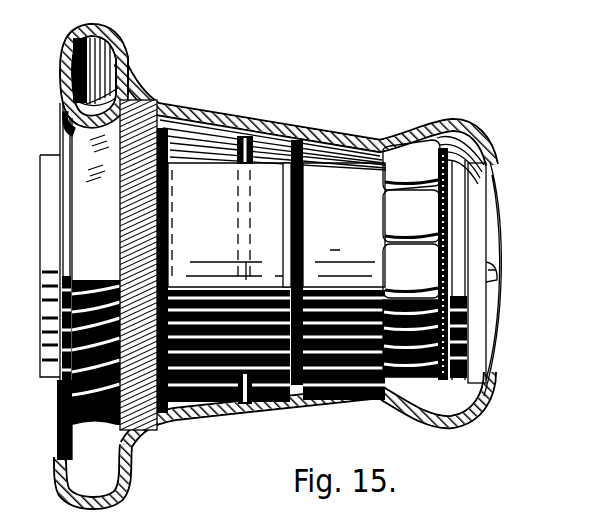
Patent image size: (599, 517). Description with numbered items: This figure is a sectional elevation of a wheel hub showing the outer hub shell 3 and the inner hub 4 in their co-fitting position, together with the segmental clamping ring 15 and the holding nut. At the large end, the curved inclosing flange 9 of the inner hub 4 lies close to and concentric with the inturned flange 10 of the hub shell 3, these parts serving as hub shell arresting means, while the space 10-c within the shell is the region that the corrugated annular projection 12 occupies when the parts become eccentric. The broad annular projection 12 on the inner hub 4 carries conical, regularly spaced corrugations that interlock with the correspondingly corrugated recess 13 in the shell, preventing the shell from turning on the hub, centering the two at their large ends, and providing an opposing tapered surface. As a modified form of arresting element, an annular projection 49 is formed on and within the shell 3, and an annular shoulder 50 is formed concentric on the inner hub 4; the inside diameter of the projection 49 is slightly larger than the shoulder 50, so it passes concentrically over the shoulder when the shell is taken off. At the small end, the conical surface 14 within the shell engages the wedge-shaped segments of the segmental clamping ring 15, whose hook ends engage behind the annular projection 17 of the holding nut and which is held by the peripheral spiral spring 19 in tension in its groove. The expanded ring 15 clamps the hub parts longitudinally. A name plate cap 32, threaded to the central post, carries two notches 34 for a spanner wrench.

The inturned flange 10 is at (66, 60).
The curved inclosing flange 9 is at (66, 76).
The annular projection 12 is at (138, 122).
The corrugated recess 13 is at (181, 128).
The annular projection 49 is at (246, 137).
The annular shoulder 50 is at (312, 140).
The conical surface 14 is at (403, 133).
The peripheral spiral spring 19 is at (456, 136).
The annular projection 17 is at (477, 192).
The name plate cap 32 is at (498, 224).
The notches 34 is at (494, 280).
The segmental clamping ring 15 is at (425, 260).
The inner hub 4 is at (276, 282).
The outer hub shell 3 is at (200, 412).
The space 10-c is at (98, 474).